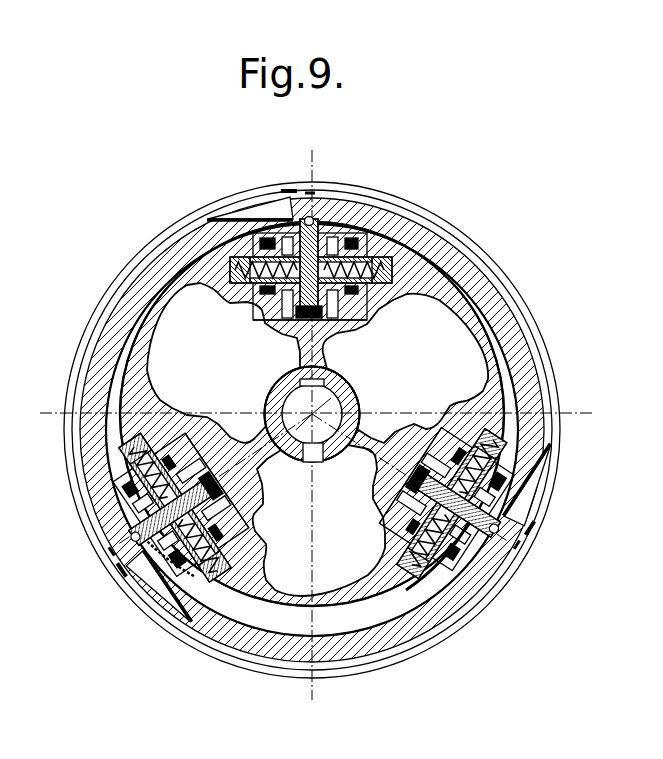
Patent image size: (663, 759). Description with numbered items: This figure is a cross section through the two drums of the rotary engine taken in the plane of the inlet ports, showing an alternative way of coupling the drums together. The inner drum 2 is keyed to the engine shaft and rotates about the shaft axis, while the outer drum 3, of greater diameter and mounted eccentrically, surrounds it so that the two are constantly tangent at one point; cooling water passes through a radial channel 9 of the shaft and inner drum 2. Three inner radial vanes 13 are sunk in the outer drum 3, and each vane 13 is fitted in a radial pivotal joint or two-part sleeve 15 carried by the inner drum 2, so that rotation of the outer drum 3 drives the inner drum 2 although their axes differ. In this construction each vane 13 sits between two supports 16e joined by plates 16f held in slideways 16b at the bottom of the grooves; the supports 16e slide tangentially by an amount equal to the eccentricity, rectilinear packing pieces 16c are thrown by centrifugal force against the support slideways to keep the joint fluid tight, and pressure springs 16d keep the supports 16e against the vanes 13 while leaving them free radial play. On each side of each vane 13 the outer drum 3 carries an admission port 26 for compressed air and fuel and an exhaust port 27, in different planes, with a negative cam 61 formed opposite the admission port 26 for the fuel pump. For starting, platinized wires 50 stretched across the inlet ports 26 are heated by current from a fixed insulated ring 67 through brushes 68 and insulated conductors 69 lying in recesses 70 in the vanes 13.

The inner drum 2 is at (480, 324).
The outer drum 3 is at (514, 331).
The radial channel 9 is at (318, 458).
The inner radial vane 13 is at (374, 213).
The oscillatory two-part sleeve 15 is at (395, 268).
The slideway 16b is at (280, 318).
The rectilinear packing piece 16c is at (262, 290).
The pressure spring 16d is at (238, 265).
The support 16e is at (392, 238).
The plate 16f is at (354, 324).
The admission port 26 is at (270, 215).
The exhaust port 27 is at (448, 574).
The platinized wire 50 is at (236, 219).
The negative cam 61 is at (180, 578).
The fixed ring 67 is at (97, 308).
The brush 68 is at (302, 189).
The insulated conductor 69 is at (130, 537).
The recess 70 is at (316, 224).